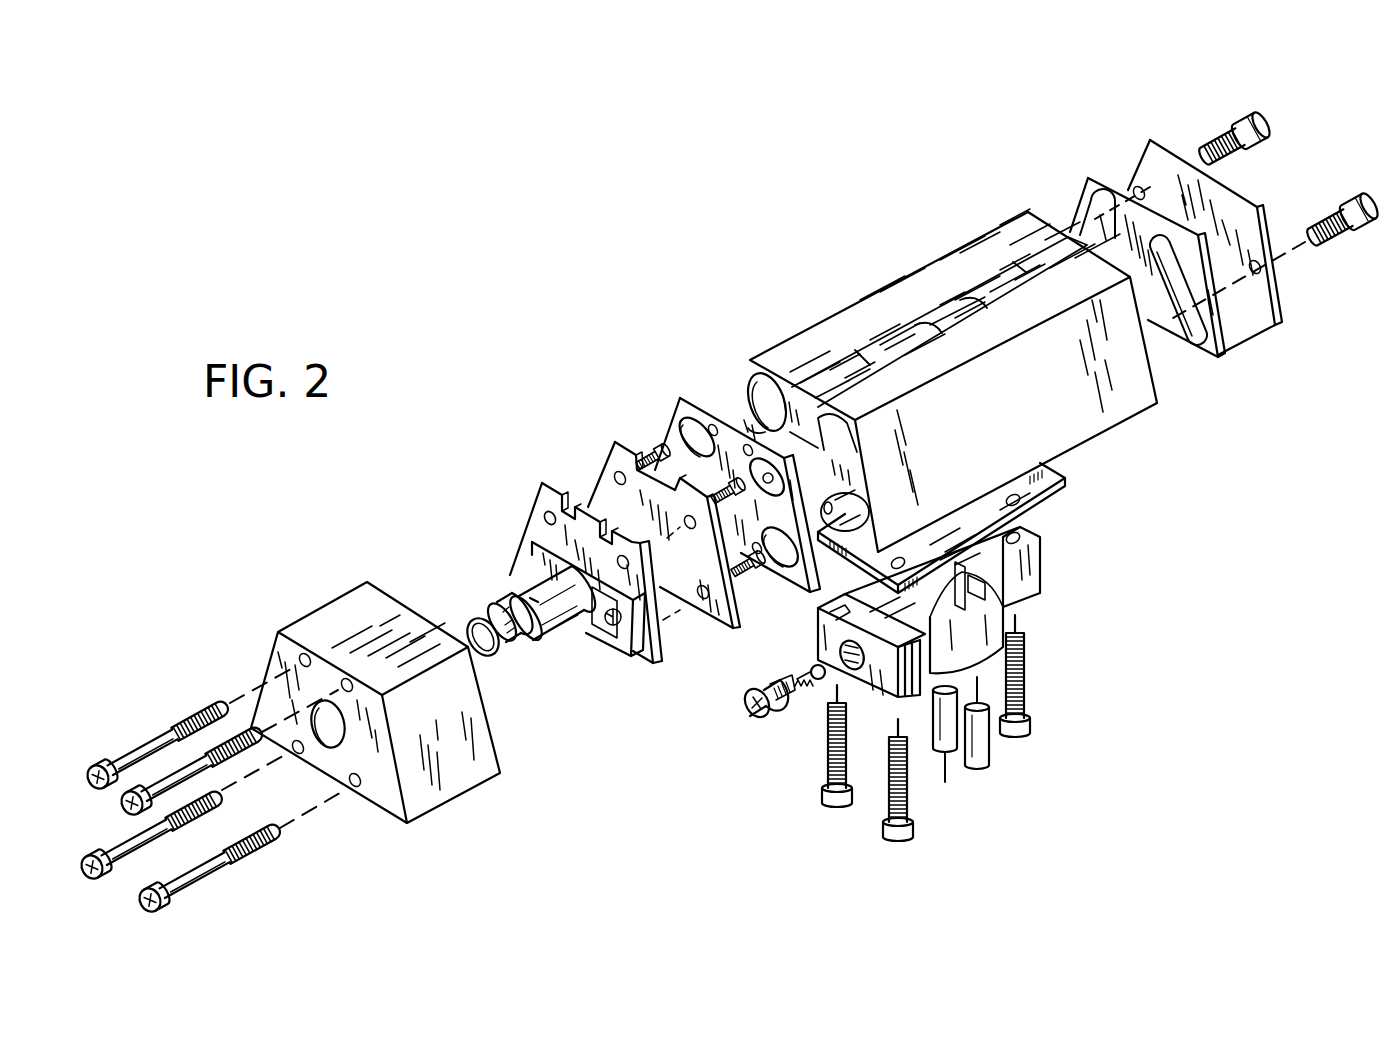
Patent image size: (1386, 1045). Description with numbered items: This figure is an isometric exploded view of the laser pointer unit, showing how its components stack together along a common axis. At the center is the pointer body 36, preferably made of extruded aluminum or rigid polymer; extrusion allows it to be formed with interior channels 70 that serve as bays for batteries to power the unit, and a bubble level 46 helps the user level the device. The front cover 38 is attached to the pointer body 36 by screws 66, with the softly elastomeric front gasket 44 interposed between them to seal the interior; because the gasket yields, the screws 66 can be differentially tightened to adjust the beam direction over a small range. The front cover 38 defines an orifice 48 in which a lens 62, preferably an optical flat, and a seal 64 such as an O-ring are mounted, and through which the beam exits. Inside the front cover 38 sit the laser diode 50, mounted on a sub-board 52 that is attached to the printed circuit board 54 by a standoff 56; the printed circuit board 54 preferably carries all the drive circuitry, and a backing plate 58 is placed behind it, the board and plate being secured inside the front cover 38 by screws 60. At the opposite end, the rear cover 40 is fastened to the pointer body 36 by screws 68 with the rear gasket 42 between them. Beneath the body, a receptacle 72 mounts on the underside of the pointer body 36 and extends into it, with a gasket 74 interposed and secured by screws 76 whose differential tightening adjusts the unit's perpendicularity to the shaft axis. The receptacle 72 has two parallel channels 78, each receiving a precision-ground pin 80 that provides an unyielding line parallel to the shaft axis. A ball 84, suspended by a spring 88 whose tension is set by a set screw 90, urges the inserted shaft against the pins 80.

The pointer body 36 is at (877, 303).
The front cover 38 is at (323, 620).
The rear cover 40 is at (1277, 290).
The rear gasket 42 is at (1098, 178).
The front gasket 44 is at (682, 396).
The bubble level 46 is at (960, 307).
The orifice 48 is at (324, 745).
The laser diode 50 is at (557, 627).
The sub-board 52 is at (533, 557).
The printed circuit board 54 is at (546, 514).
The standoff 56 is at (653, 663).
The backing plate 58 is at (611, 457).
The screws 60 is at (653, 453).
The lens 62 is at (490, 603).
The seal 64 is at (470, 618).
The screws 66 is at (137, 747).
The screws 68 is at (1227, 135).
The interior channels 70 is at (732, 422).
The receptacle 72 is at (1030, 560).
The gasket 74 is at (1068, 490).
The screws 76 is at (827, 763).
The channels 78 is at (985, 580).
The pins 80 is at (1040, 765).
The ball 84 is at (822, 679).
The spring 88 is at (797, 677).
The set screw 90 is at (752, 715).